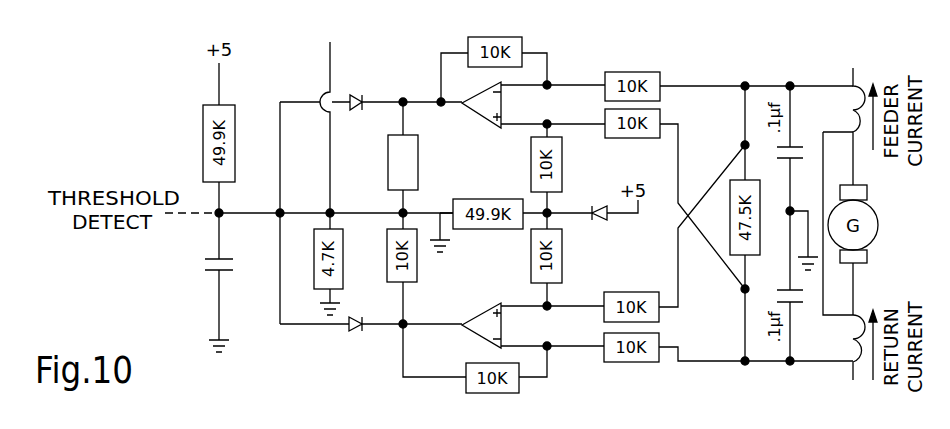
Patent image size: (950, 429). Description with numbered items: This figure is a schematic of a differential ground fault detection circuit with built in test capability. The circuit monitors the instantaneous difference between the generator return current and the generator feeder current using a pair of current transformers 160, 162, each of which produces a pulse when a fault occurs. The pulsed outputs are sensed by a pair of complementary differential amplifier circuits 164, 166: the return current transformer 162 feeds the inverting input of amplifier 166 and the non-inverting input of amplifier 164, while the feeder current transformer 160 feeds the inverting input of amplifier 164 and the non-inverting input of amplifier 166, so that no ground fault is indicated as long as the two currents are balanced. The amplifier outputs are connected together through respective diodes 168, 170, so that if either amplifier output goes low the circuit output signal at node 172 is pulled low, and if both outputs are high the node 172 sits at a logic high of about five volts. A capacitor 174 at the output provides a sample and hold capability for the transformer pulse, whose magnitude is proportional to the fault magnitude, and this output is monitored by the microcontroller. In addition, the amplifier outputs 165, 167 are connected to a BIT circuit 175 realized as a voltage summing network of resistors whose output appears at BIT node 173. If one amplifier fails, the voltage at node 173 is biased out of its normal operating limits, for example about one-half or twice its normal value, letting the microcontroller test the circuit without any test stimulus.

The feeder current transformer 160 is at (866, 84).
The return current transformer 162 is at (862, 378).
The differential amplifier circuit 164 is at (550, 74).
The amplifier output 165 is at (400, 104).
The differential amplifier circuit 166 is at (557, 377).
The amplifier output 167 is at (401, 327).
The diode 168 is at (383, 75).
The diode 170 is at (351, 331).
The output node 172 is at (219, 213).
The BIT node 173 is at (407, 212).
The capacitor 174 is at (214, 272).
The BIT circuit 175 is at (378, 188).